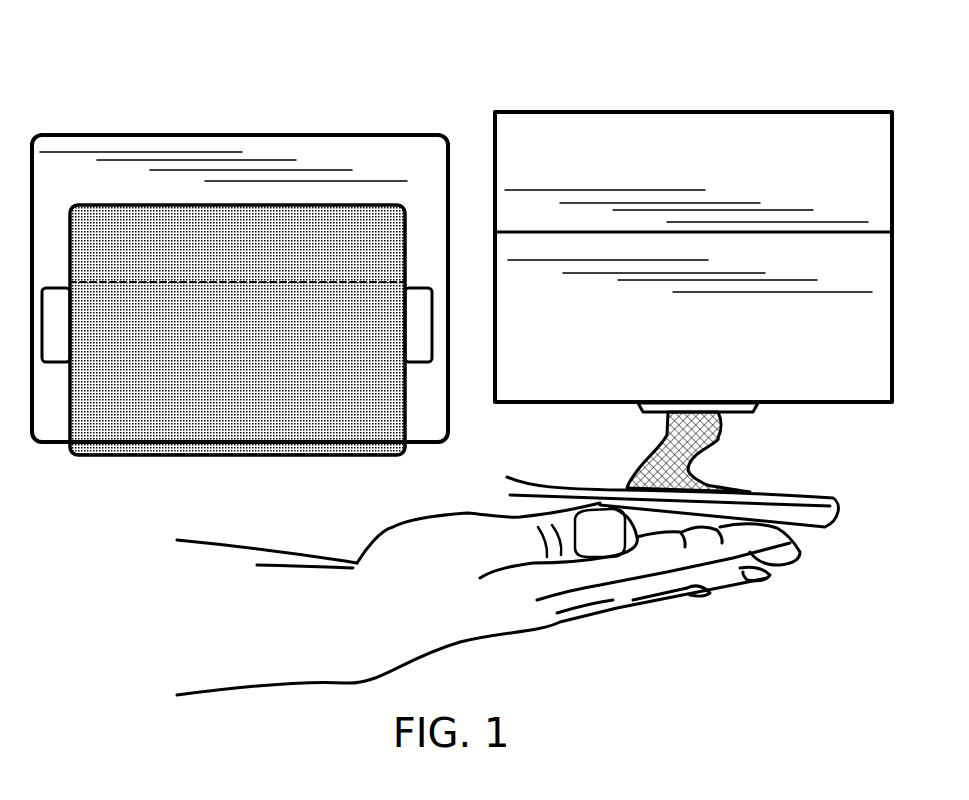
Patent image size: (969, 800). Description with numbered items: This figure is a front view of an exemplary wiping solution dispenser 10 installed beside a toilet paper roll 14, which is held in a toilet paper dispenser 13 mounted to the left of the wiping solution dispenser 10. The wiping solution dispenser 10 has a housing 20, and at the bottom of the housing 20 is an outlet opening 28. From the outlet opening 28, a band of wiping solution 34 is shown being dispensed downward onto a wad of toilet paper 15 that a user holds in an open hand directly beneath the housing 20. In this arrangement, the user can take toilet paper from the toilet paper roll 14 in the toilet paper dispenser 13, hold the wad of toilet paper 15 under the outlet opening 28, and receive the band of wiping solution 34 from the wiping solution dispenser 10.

The wiping solution dispenser 10 is at (818, 128).
The toilet paper dispenser 13 is at (343, 134).
The toilet paper roll 14 is at (143, 422).
The wad of toilet paper 15 is at (777, 492).
The housing 20 is at (672, 137).
The outlet opening 28 is at (653, 413).
The band of wiping solution 34 is at (722, 428).